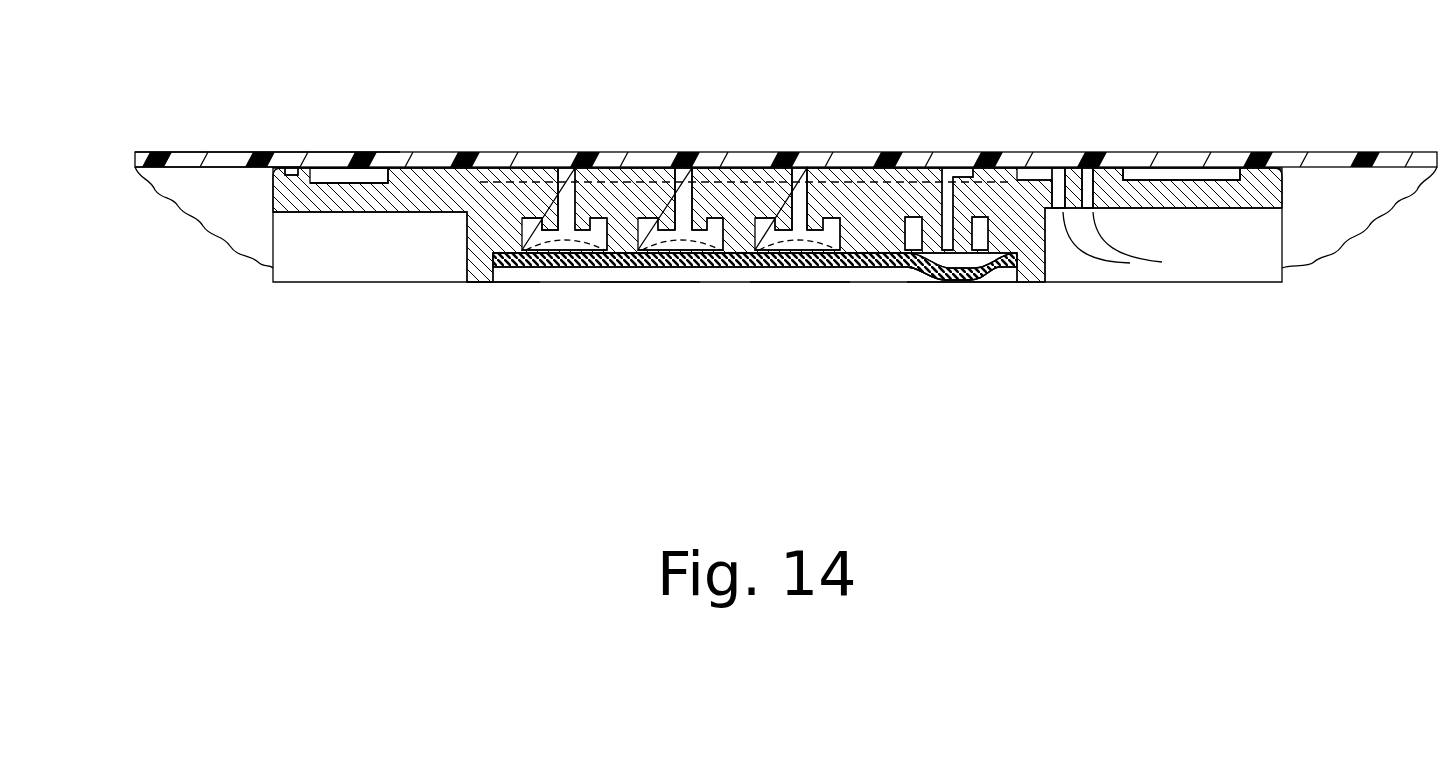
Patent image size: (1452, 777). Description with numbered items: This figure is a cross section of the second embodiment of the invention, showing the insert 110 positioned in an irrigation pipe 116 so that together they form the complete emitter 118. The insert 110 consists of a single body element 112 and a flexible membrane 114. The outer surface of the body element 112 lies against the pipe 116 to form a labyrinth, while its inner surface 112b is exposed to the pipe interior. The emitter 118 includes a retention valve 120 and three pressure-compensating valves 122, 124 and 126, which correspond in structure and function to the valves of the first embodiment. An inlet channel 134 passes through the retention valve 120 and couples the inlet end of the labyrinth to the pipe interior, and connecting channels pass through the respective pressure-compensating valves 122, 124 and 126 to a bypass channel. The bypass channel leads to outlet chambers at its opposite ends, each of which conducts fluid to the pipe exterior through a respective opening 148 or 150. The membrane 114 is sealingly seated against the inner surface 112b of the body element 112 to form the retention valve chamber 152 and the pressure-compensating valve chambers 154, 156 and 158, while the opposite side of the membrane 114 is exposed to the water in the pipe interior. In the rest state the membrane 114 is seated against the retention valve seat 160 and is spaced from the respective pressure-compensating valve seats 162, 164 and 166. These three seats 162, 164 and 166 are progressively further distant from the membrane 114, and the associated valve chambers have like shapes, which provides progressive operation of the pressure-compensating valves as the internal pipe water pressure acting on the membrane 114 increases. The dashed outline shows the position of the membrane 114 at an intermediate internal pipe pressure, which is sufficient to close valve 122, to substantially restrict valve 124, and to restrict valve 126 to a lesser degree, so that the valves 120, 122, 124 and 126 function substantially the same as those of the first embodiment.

The insert 110 is at (230, 297).
The body element 112 is at (340, 283).
The inner surface 112b is at (360, 212).
The flexible membrane 114 is at (540, 220).
The irrigation pipe 116 is at (555, 151).
The emitter 118 is at (268, 146).
The retention valve 120 is at (958, 305).
The pressure-compensating valve 122 is at (802, 288).
The pressure-compensating valve 124 is at (668, 288).
The pressure-compensating valve 126 is at (500, 283).
The inlet channel 134 is at (1073, 178).
The opening 148 is at (1165, 152).
The opening 150 is at (362, 178).
The retention valve chamber 152 is at (978, 175).
The pressure-compensating valve chamber 154 is at (763, 218).
The pressure-compensating valve chamber 156 is at (646, 218).
The pressure-compensating valve chamber 158 is at (528, 218).
The retention valve seat 160 is at (963, 265).
The pressure-compensating valve seat 162 is at (803, 242).
The pressure-compensating valve seat 164 is at (690, 238).
The pressure-compensating valve seat 166 is at (575, 233).